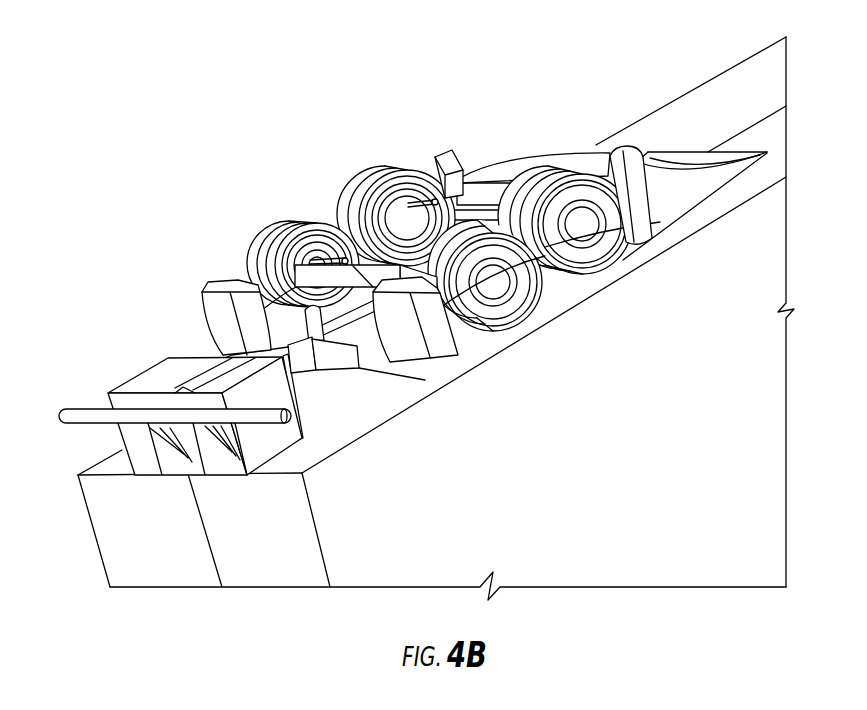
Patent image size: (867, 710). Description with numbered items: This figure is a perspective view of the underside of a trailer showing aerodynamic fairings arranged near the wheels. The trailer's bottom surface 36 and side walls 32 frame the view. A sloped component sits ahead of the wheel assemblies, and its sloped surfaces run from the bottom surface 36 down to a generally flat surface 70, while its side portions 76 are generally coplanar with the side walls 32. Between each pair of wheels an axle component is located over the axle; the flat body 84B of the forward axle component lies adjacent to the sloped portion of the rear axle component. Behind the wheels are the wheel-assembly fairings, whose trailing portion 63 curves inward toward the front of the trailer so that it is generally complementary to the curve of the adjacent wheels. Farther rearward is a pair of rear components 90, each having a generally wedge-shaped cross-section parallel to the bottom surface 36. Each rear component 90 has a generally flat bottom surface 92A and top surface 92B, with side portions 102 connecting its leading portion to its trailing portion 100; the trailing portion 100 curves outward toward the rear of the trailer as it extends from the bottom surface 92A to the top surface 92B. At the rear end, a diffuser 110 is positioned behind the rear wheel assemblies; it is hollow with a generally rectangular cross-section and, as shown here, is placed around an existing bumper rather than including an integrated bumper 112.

The trailer side walls 32 is at (592, 408).
The bottom surface 36 is at (715, 115).
The trailing portion 63 is at (675, 188).
The generally flat surface 70 is at (488, 167).
The side portions 76 is at (686, 217).
The flat body 84B is at (397, 166).
The rear component 90 is at (200, 303).
The bottom surface 92A is at (220, 290).
The top surface 92B is at (485, 366).
The trailing portion 100 is at (222, 333).
The side portions 102 is at (313, 368).
The diffuser 110 is at (167, 395).
The integrated bumper 112 is at (270, 428).